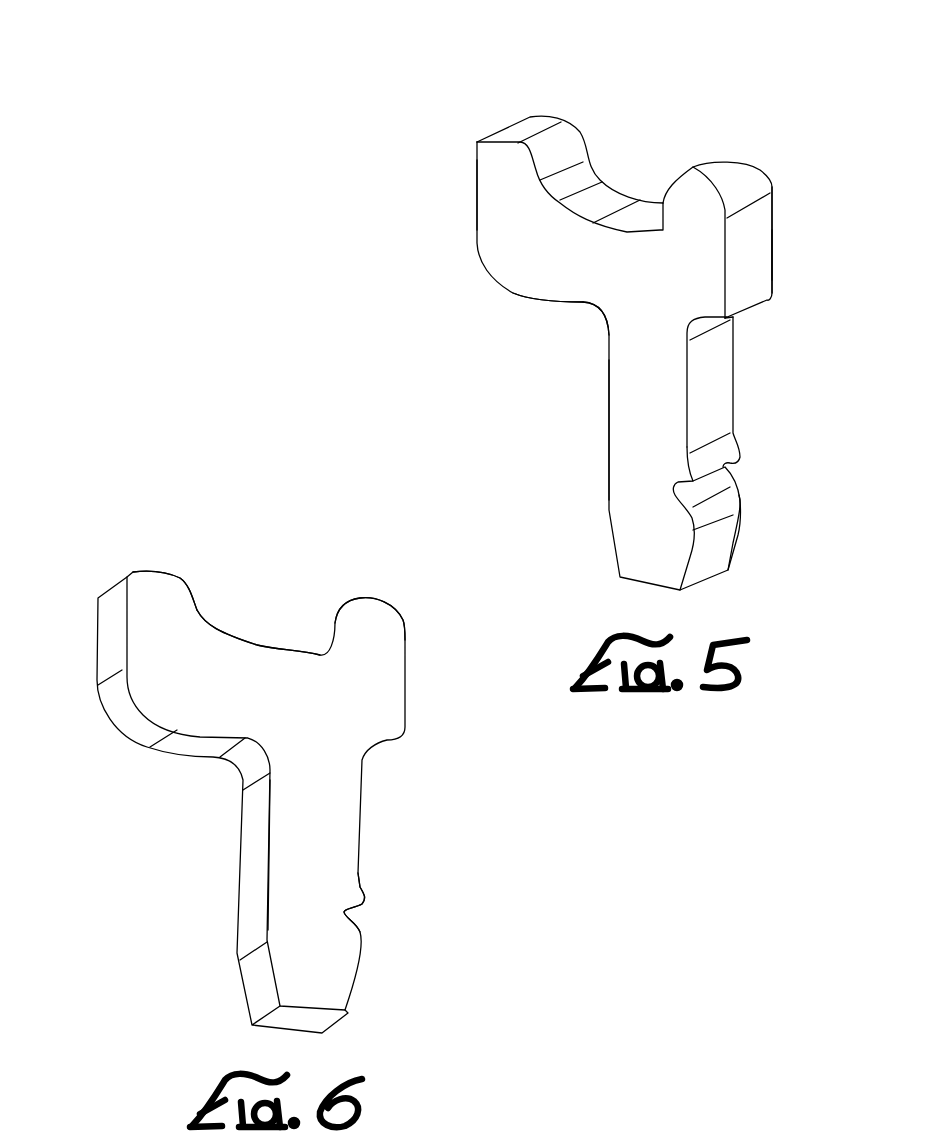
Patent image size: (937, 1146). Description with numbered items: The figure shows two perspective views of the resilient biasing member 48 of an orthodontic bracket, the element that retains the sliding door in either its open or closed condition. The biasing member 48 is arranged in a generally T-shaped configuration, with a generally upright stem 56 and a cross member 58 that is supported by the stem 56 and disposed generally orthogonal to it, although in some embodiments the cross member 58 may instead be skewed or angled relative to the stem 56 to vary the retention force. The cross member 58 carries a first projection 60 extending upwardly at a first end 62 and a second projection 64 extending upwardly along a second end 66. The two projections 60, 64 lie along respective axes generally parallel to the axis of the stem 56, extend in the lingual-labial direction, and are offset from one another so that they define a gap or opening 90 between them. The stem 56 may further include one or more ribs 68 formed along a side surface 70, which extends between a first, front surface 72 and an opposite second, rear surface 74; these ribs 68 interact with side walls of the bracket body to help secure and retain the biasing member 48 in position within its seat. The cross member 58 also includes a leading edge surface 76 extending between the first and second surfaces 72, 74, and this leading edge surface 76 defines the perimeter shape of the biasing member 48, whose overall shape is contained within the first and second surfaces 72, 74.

In FIG. 5, the biasing member 48 is at (388, 68).
In FIG. 6, the biasing member 48 is at (134, 850).
In FIG. 5, the stem 56 is at (633, 472).
In FIG. 6, the stem 56 is at (327, 830).
In FIG. 5, the cross member 58 is at (538, 263).
In FIG. 6, the cross member 58 is at (211, 676).
In FIG. 5, the first projection 60 is at (525, 128).
In FIG. 6, the first projection 60 is at (150, 571).
In FIG. 5, the first end 62 is at (458, 201).
In FIG. 5, the second projection 64 is at (738, 174).
In FIG. 6, the second projection 64 is at (367, 597).
In FIG. 5, the second end 66 is at (783, 177).
In FIG. 5, the rib 68 is at (722, 457).
In FIG. 6, the rib 68 is at (367, 900).
In FIG. 5, the side surface 70 is at (715, 380).
In FIG. 5, the first surface 72 is at (648, 373).
In FIG. 5, the second surface 74 is at (777, 262).
In FIG. 6, the leading edge surface 76 is at (110, 638).
In FIG. 5, the opening 90 is at (643, 158).